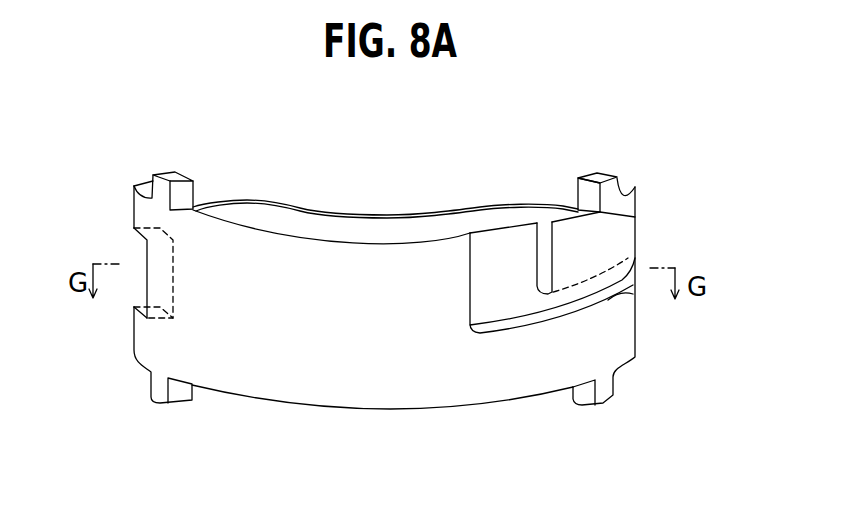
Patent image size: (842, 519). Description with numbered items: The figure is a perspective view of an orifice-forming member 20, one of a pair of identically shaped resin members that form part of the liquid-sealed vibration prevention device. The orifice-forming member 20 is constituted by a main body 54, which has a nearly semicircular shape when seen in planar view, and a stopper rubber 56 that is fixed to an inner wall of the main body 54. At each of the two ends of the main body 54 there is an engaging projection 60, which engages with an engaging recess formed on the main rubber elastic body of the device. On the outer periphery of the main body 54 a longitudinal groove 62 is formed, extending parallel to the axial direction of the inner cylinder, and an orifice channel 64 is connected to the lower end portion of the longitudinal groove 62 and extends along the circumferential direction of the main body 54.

The orifice-forming member 20 is at (386, 261).
The main body 54 is at (347, 231).
The stopper rubber 56 is at (409, 208).
The engaging projection 60 is at (134, 212).
The longitudinal groove 62 is at (537, 252).
The orifice channel 64 is at (637, 305).